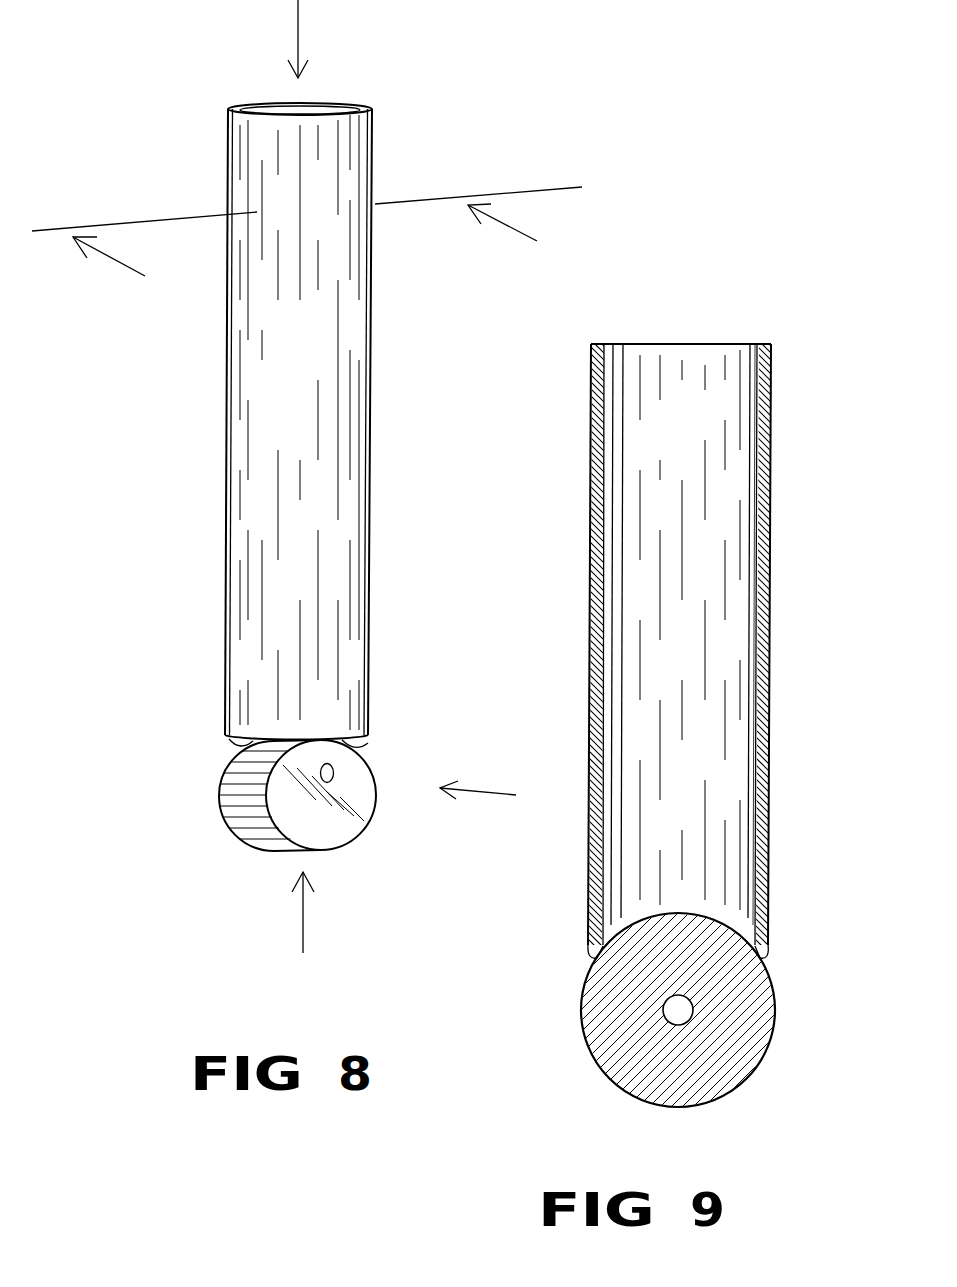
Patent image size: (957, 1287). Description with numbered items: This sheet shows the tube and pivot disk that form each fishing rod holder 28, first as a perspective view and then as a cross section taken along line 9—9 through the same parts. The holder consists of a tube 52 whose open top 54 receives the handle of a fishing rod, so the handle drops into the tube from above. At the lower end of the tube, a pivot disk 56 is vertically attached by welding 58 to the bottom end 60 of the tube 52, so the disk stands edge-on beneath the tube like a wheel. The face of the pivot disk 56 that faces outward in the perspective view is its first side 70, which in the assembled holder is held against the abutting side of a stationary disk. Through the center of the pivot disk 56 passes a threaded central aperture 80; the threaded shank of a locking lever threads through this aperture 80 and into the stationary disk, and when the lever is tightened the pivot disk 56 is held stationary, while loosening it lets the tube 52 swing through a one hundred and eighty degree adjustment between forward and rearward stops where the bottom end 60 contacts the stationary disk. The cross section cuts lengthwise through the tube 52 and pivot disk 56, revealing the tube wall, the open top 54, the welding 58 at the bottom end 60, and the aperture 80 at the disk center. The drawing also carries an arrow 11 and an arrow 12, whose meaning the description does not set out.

In FIG. 8, the section line 9 is at (307, 249).
In FIG. 8, the direction arrow 11 is at (303, 939).
In FIG. 8, the direction arrow 12 is at (493, 797).
In FIG. 8, the fishing rod holder 28 is at (215, 505).
In FIG. 9, the fishing rod holder 28 is at (780, 505).
In FIG. 8, the tube 52 is at (378, 337).
In FIG. 9, the tube 52 is at (580, 490).
In FIG. 8, the open top 54 is at (322, 106).
In FIG. 9, the open top 54 is at (693, 344).
In FIG. 8, the pivot disk 56 is at (210, 800).
In FIG. 9, the pivot disk 56 is at (778, 1048).
In FIG. 8, the welding 58 is at (236, 745).
In FIG. 9, the welding 58 is at (590, 952).
In FIG. 8, the bottom end 60 is at (365, 746).
In FIG. 9, the bottom end 60 is at (775, 950).
In FIG. 8, the first side 70 is at (347, 822).
In FIG. 8, the threaded central aperture 80 is at (334, 771).
In FIG. 9, the threaded central aperture 80 is at (676, 996).